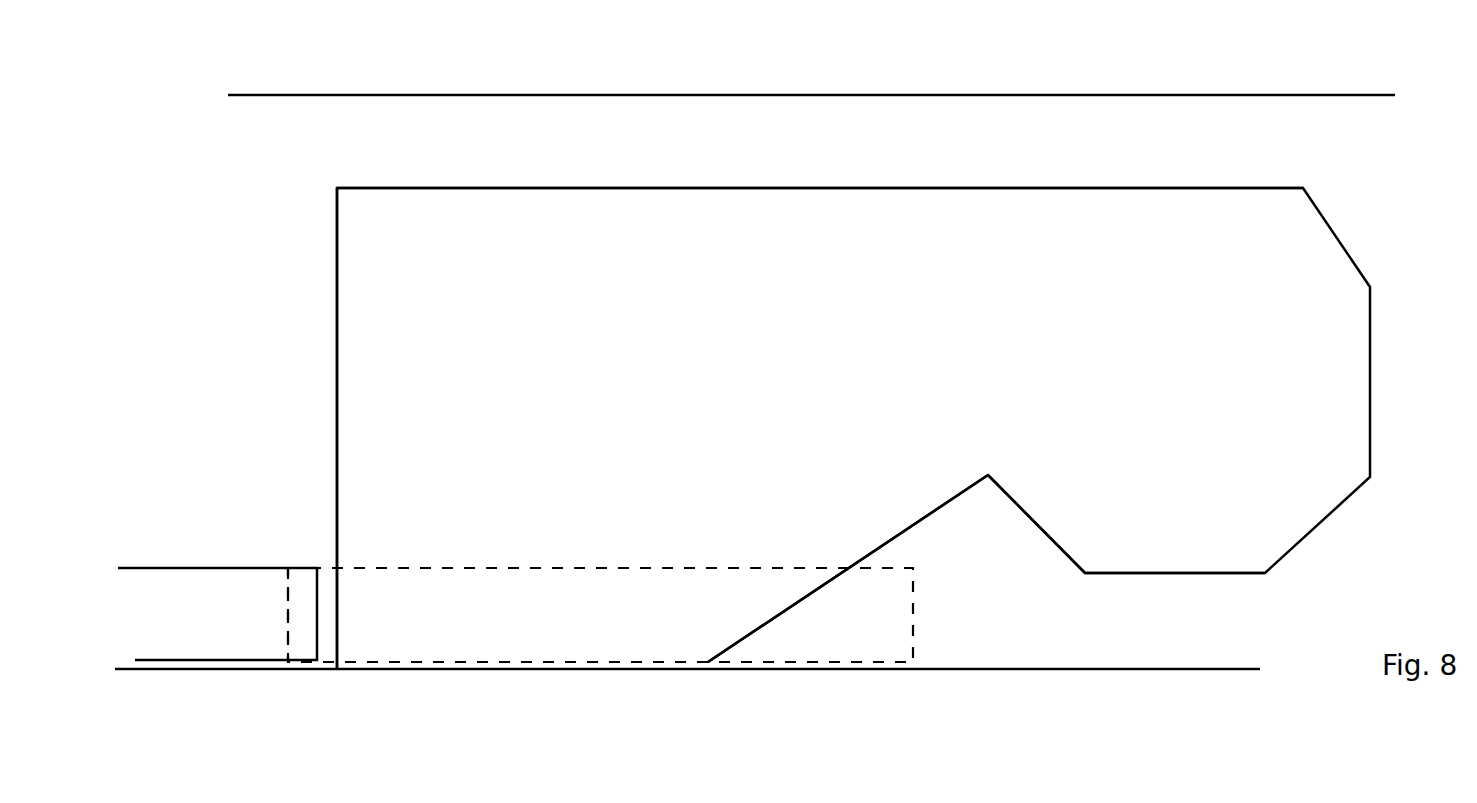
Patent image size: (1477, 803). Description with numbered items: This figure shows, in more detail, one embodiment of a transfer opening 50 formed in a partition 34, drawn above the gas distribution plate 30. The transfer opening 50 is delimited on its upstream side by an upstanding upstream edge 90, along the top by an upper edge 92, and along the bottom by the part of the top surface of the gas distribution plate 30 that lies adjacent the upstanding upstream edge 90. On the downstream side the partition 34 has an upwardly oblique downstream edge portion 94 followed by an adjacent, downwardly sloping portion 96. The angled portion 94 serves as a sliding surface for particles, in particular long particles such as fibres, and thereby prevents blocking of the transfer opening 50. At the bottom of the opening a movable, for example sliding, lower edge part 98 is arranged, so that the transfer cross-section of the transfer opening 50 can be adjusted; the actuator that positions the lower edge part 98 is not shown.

The gas distribution plate 30 is at (1060, 675).
The partition 34 is at (782, 117).
The transfer opening 50 is at (829, 428).
The upstanding upstream edge 90 is at (337, 322).
The upper edge 92 is at (602, 188).
The upwardly oblique downstream edge portion 94 is at (890, 540).
The downwardly sloping portion 96 is at (1025, 508).
The lower edge part 98 is at (198, 567).